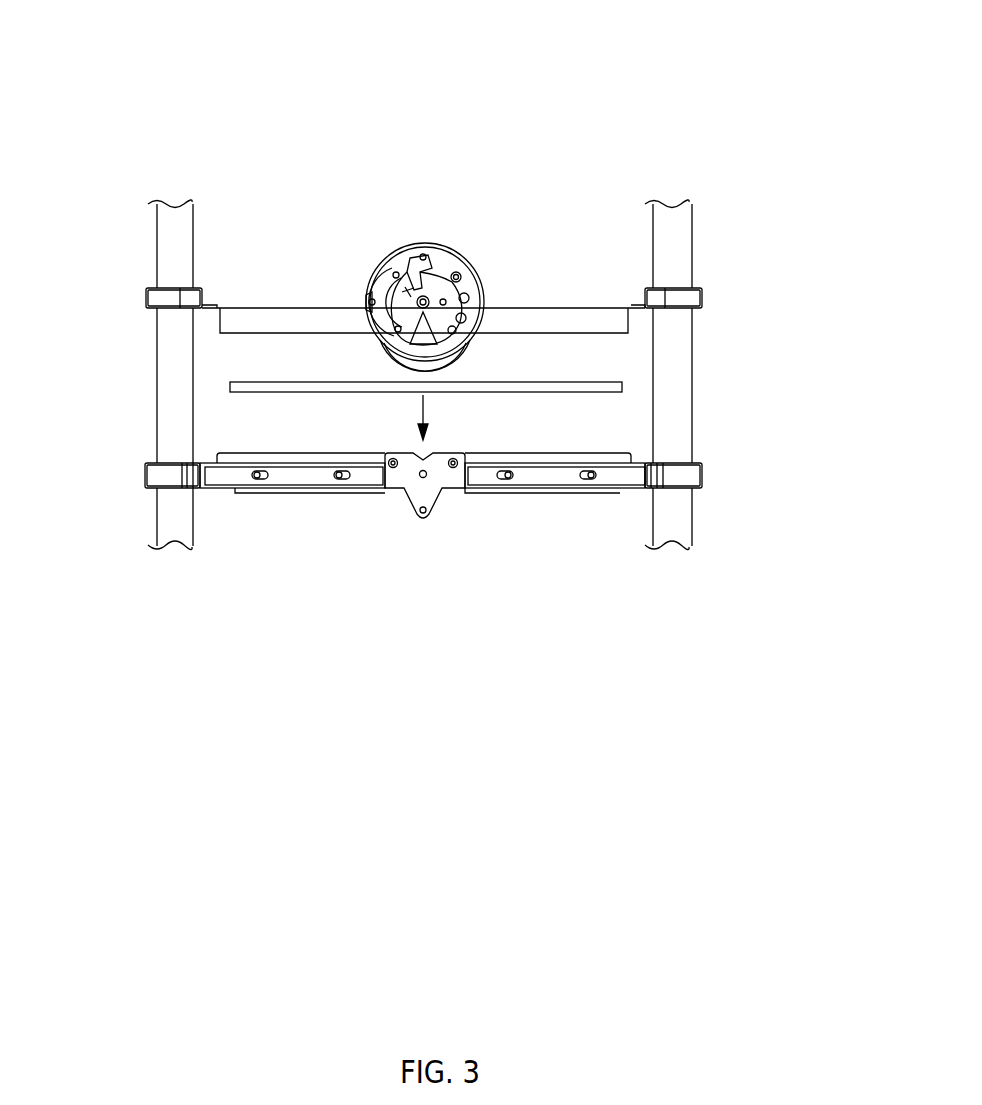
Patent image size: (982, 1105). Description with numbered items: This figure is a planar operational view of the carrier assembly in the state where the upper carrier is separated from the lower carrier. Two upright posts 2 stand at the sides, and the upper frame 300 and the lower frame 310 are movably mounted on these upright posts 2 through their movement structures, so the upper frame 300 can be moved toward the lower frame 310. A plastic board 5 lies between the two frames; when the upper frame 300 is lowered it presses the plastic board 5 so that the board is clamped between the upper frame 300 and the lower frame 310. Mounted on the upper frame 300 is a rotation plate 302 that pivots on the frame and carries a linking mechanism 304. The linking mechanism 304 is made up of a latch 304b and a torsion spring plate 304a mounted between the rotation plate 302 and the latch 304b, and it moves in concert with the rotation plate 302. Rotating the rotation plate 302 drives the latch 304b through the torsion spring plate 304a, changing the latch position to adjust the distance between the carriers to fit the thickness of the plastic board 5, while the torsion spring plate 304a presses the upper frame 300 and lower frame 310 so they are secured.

The upright posts 2 is at (168, 378).
The plastic board 5 is at (623, 383).
The upper frame 300 is at (582, 318).
The rotation plate 302 is at (368, 303).
The linking mechanism 304 is at (406, 210).
The torsion spring plate 304a is at (416, 243).
The latch 304b is at (481, 274).
The lower frame 310 is at (383, 489).